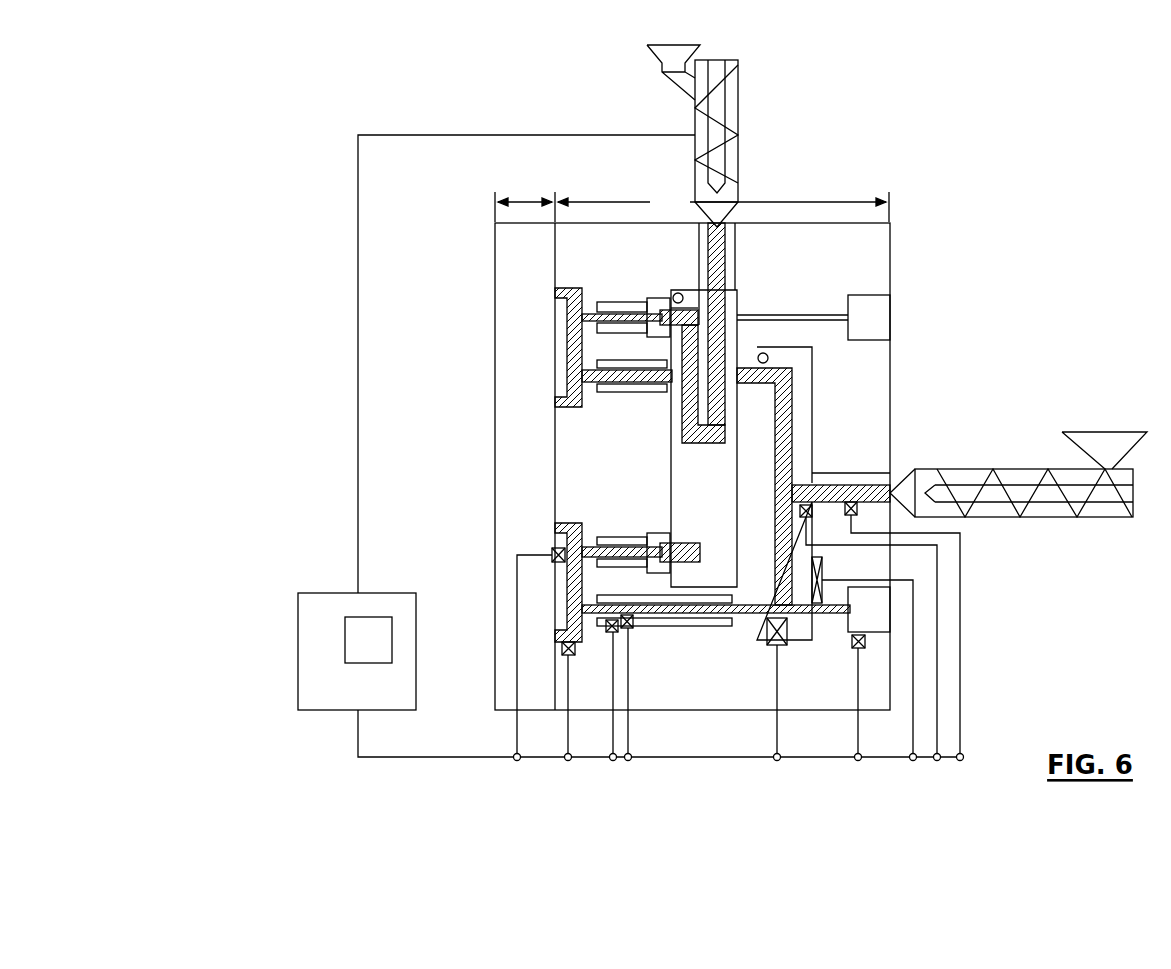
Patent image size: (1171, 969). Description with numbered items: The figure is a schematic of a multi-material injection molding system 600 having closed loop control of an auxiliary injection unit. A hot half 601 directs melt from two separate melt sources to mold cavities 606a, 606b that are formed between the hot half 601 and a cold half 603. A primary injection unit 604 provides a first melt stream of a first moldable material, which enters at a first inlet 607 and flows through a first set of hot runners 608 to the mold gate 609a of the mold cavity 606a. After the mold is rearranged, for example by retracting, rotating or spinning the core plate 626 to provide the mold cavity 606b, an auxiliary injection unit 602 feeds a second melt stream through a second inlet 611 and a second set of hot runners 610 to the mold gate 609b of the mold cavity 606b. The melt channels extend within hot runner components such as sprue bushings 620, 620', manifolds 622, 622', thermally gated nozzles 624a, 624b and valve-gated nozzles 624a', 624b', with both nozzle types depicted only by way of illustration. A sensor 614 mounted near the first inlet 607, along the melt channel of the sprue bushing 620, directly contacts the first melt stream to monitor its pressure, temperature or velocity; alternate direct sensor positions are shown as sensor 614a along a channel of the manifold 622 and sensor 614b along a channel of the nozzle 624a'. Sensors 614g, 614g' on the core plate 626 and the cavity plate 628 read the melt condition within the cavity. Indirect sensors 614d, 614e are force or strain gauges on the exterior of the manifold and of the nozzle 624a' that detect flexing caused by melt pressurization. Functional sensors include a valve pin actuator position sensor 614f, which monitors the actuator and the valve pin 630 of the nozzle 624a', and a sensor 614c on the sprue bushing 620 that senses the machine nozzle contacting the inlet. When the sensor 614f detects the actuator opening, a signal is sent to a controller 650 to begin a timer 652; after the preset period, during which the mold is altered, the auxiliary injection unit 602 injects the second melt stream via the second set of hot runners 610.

The injection molding system 600 is at (1000, 102).
The hot half 601 is at (722, 202).
The auxiliary injection unit 602 is at (738, 90).
The cold half 603 is at (528, 198).
The primary injection unit 604 is at (1073, 518).
The mold cavity 606a is at (555, 288).
The mold cavity 606b is at (580, 312).
The first inlet 607 is at (885, 468).
The first set of hot runners 608 is at (792, 430).
The mold gate 609a is at (577, 357).
The mold gate 609b is at (576, 330).
The second set of hot runners 610 is at (726, 332).
The second inlet 611 is at (722, 232).
The sensor 614 is at (880, 578).
The sensor 614a is at (778, 712).
The sensor 614b is at (633, 630).
The sensor 614c is at (812, 512).
The sensor 614d is at (825, 582).
The sensor 614e is at (616, 634).
The valve pin actuator position sensor 614f is at (866, 642).
The sensor 614g is at (501, 696).
The sensor 614g' is at (497, 636).
The sprue bushing 620 is at (891, 429).
The sprue bushing 620' is at (793, 275).
The manifold 622 is at (840, 644).
The manifold 622' is at (901, 309).
The thermally gated nozzle 624a is at (617, 402).
The valve-gated nozzle 624a' is at (716, 643).
The thermally gated nozzle 624b is at (632, 526).
The valve-gated nozzle 624b' is at (715, 293).
The core plate 626 is at (520, 450).
The cavity plate 628 is at (614, 462).
The valve pin 630 is at (893, 630).
The controller 650 is at (295, 667).
The timer 652 is at (345, 637).